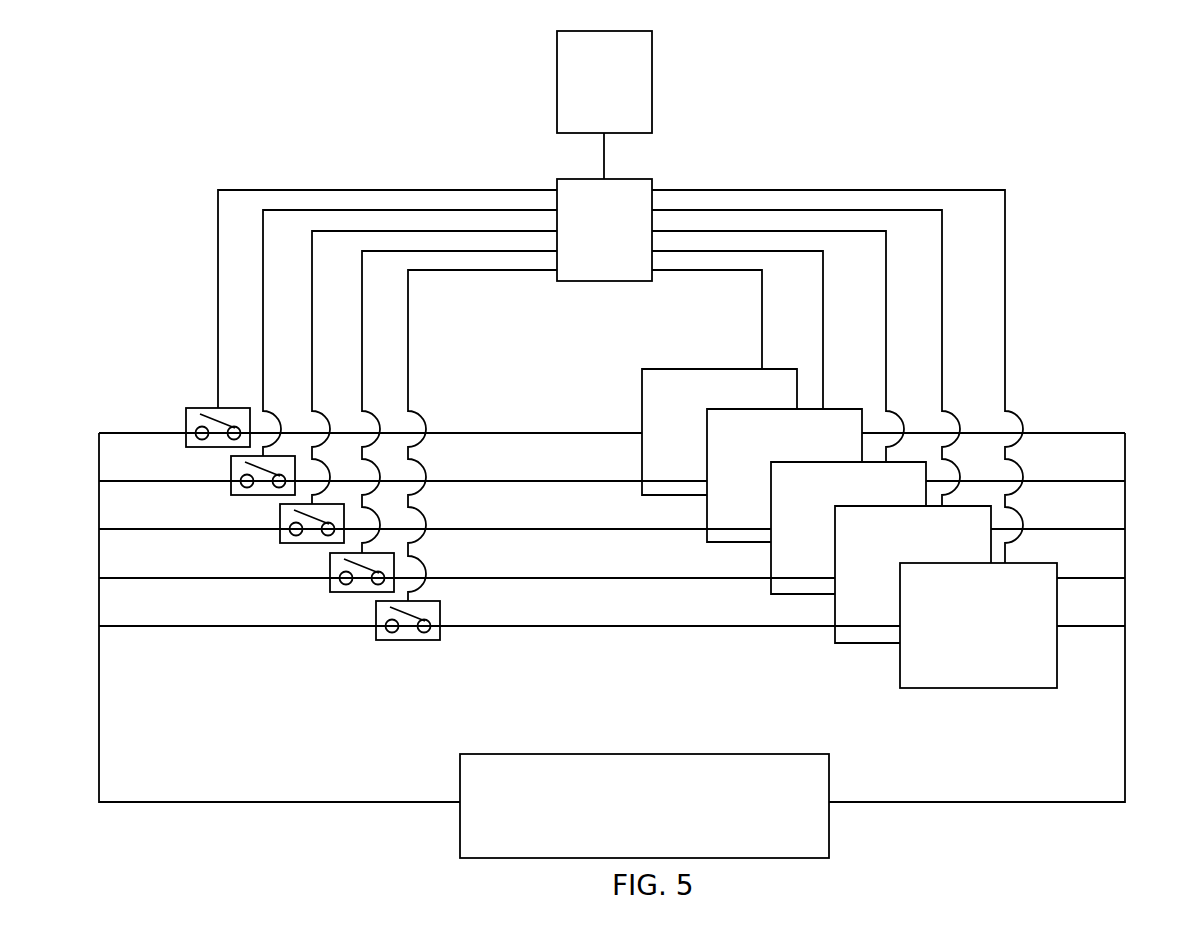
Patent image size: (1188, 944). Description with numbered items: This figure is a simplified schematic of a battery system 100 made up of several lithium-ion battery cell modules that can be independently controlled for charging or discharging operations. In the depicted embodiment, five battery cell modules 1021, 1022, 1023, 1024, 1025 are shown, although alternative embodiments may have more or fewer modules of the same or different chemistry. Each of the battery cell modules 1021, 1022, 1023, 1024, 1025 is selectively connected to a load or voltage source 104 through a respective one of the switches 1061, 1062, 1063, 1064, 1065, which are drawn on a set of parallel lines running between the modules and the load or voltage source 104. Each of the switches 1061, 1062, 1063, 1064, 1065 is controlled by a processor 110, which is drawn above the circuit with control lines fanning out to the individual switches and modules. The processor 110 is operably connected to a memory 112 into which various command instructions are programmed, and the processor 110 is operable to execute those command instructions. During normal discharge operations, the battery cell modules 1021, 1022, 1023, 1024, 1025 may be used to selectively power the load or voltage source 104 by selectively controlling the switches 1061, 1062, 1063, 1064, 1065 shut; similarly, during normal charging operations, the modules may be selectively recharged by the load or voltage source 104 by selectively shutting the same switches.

The battery system 100 is at (1053, 135).
The memory 112 is at (653, 53).
The processor 110 is at (653, 179).
The load or voltage source 104 is at (830, 790).
The lithium-ion battery cell module 1025 is at (695, 404).
The lithium-ion battery cell module 1024 is at (759, 444).
The lithium-ion battery cell module 1023 is at (825, 494).
The lithium-ion battery cell module 1022 is at (888, 534).
The lithium-ion battery cell module 1021 is at (953, 599).
The switch 1065 is at (184, 444).
The switch 1064 is at (229, 490).
The switch 1063 is at (279, 539).
The switch 1062 is at (329, 587).
The switch 1061 is at (376, 637).